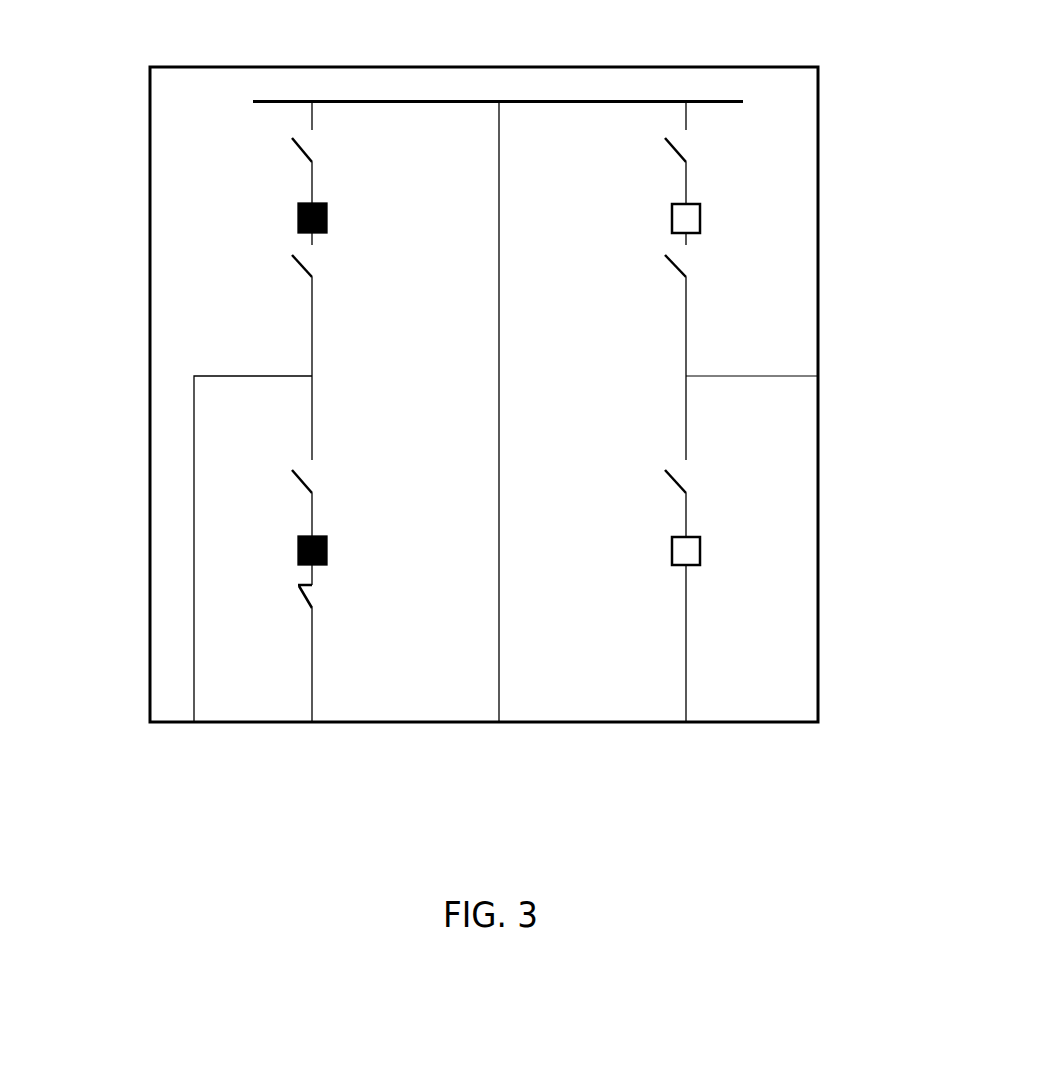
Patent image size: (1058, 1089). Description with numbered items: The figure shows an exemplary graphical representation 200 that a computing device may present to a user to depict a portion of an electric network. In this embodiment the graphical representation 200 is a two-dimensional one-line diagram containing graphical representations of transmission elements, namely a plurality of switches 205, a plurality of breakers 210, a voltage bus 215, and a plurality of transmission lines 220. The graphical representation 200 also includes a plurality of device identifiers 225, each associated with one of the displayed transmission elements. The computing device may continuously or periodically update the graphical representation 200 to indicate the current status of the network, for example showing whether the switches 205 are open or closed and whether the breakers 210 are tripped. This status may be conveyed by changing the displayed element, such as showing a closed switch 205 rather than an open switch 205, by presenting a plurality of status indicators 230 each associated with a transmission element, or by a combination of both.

The graphical representation 200 is at (128, 95).
The switches 205 is at (297, 162).
The breakers 210 is at (297, 223).
The voltage bus 215 is at (715, 101).
The transmission lines 220 is at (311, 679).
The device identifiers 225 is at (203, 156).
The status indicators 230 is at (373, 628).